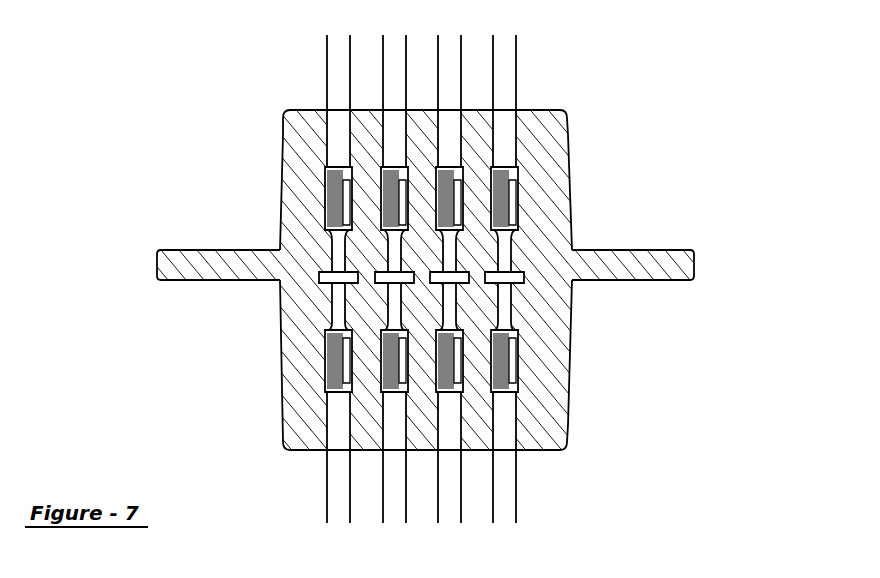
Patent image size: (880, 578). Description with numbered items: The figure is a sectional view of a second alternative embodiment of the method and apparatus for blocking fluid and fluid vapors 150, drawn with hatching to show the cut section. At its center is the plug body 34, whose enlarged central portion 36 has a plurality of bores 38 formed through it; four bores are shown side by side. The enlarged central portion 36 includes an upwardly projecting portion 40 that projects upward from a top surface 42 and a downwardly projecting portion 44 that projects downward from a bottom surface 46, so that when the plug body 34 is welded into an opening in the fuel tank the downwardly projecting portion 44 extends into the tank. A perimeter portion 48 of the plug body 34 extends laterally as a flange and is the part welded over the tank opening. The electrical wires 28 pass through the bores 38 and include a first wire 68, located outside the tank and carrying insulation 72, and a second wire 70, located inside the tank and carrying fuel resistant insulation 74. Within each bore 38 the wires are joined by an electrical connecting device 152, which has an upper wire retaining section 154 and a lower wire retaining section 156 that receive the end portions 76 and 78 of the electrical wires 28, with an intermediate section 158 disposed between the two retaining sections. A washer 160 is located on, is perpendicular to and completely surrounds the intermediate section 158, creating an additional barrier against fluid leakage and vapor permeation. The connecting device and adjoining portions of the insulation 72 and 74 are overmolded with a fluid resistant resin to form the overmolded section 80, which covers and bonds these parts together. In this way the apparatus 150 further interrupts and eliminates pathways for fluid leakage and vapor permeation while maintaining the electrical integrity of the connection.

The electrical wires 28 is at (338, 50).
The first wire 68 is at (390, 55).
The insulation of the first wire 72 is at (408, 90).
The bores 38 is at (327, 108).
The upwardly projecting portion 40 is at (283, 125).
The enlarged central portion 36 is at (563, 117).
The plug body 34 is at (592, 135).
The method and apparatus for blocking fluid and fluid vapors 150 is at (675, 108).
The end portion of the electrical wire 76 is at (312, 170).
The wire retaining section 154 is at (323, 198).
The electrical connecting device 152 is at (307, 247).
The top surface 42 is at (168, 249).
The perimeter portion 48 is at (157, 262).
The bottom surface 46 is at (168, 283).
The washer 160 is at (318, 277).
The intermediate section 158 is at (332, 305).
The wire retaining section 156 is at (325, 370).
The end portion of the electrical wire 78 is at (312, 398).
The downwardly projecting portion 44 is at (563, 445).
The second wire 70 is at (336, 512).
The insulation of the second wire 74 is at (355, 512).
The overmolded section 80 is at (645, 233).